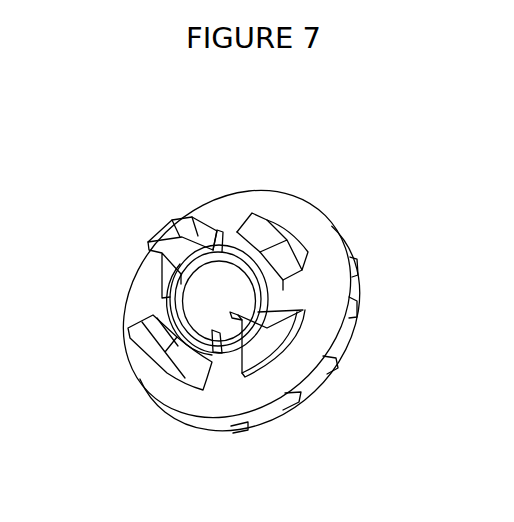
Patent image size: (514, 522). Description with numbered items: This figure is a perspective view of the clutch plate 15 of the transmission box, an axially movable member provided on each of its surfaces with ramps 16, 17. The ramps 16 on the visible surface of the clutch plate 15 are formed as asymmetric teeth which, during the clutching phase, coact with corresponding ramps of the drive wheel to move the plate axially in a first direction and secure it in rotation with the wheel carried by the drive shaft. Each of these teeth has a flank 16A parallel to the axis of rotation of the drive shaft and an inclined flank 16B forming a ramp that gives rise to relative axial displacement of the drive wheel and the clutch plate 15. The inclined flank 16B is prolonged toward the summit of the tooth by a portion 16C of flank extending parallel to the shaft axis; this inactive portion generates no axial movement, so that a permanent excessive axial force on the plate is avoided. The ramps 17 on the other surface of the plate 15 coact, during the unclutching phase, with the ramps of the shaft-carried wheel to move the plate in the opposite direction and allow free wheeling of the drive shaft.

The clutch plate 15 is at (241, 293).
The ramps 16 is at (214, 196).
The flank 16A is at (124, 421).
The inclined flank 16B is at (360, 311).
The flank portion 16C is at (356, 251).
The ramps 17 is at (332, 345).